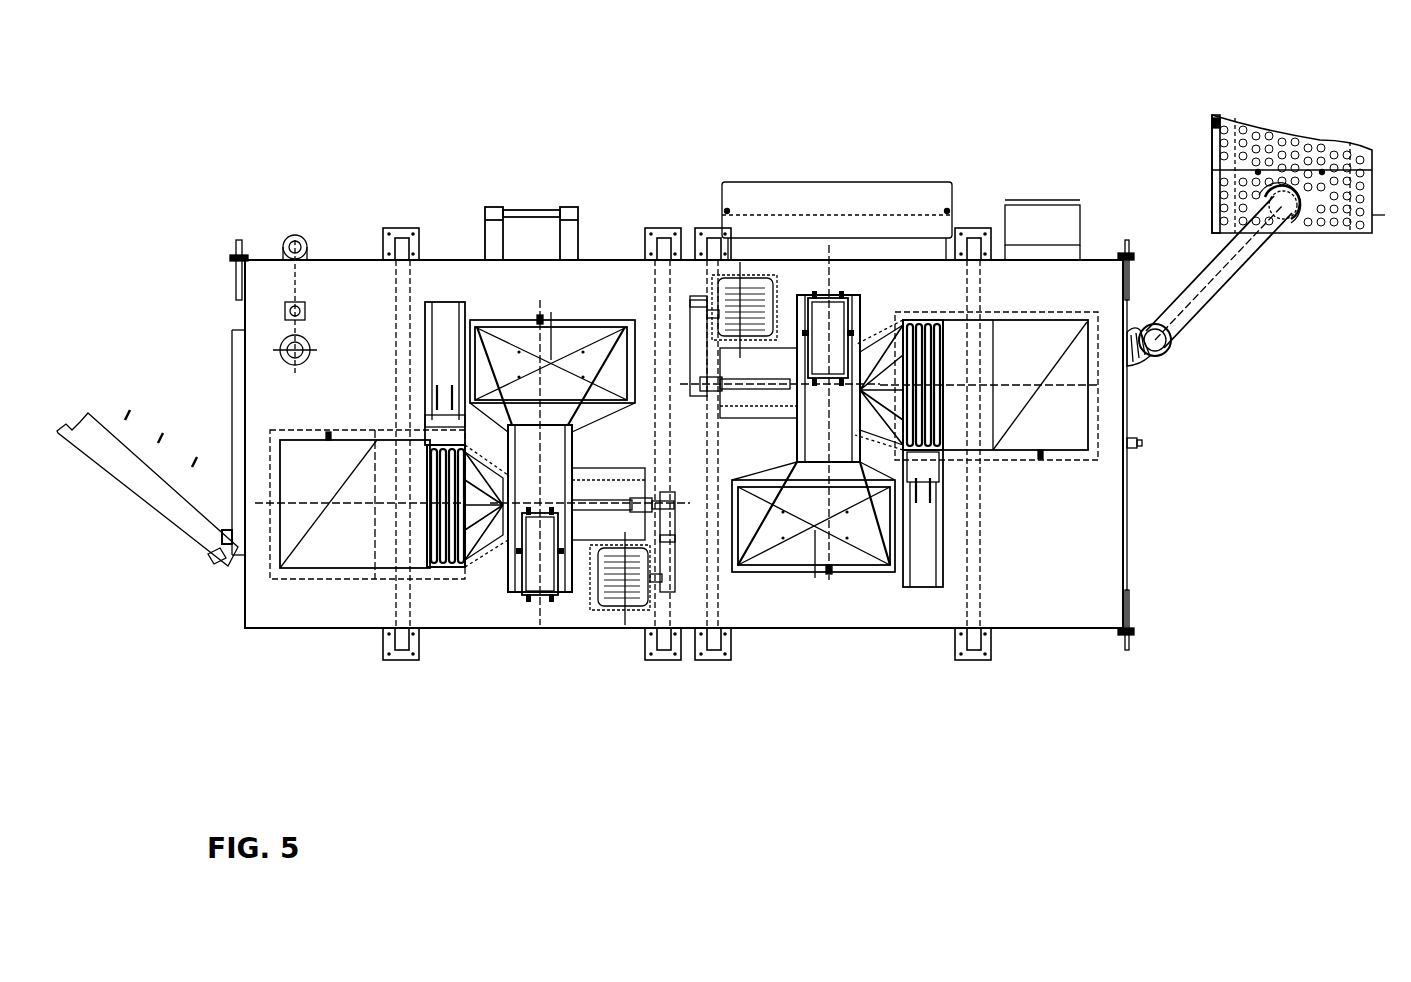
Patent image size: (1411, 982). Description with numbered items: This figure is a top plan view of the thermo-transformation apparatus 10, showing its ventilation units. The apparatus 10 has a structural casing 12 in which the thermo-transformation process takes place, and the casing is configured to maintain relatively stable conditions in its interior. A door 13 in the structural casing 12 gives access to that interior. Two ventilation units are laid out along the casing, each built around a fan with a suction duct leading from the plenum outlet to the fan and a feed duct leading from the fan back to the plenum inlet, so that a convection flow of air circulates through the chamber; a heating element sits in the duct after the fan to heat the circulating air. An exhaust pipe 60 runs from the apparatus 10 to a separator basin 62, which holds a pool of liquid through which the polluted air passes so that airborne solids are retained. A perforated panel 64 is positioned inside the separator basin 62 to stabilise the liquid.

The apparatus 10 is at (486, 110).
The structural casing 12 is at (352, 258).
The door 13 is at (170, 510).
The exhaust pipe 60 is at (1225, 295).
The separator basin 62 is at (1210, 143).
The perforated panel 64 is at (1212, 200).